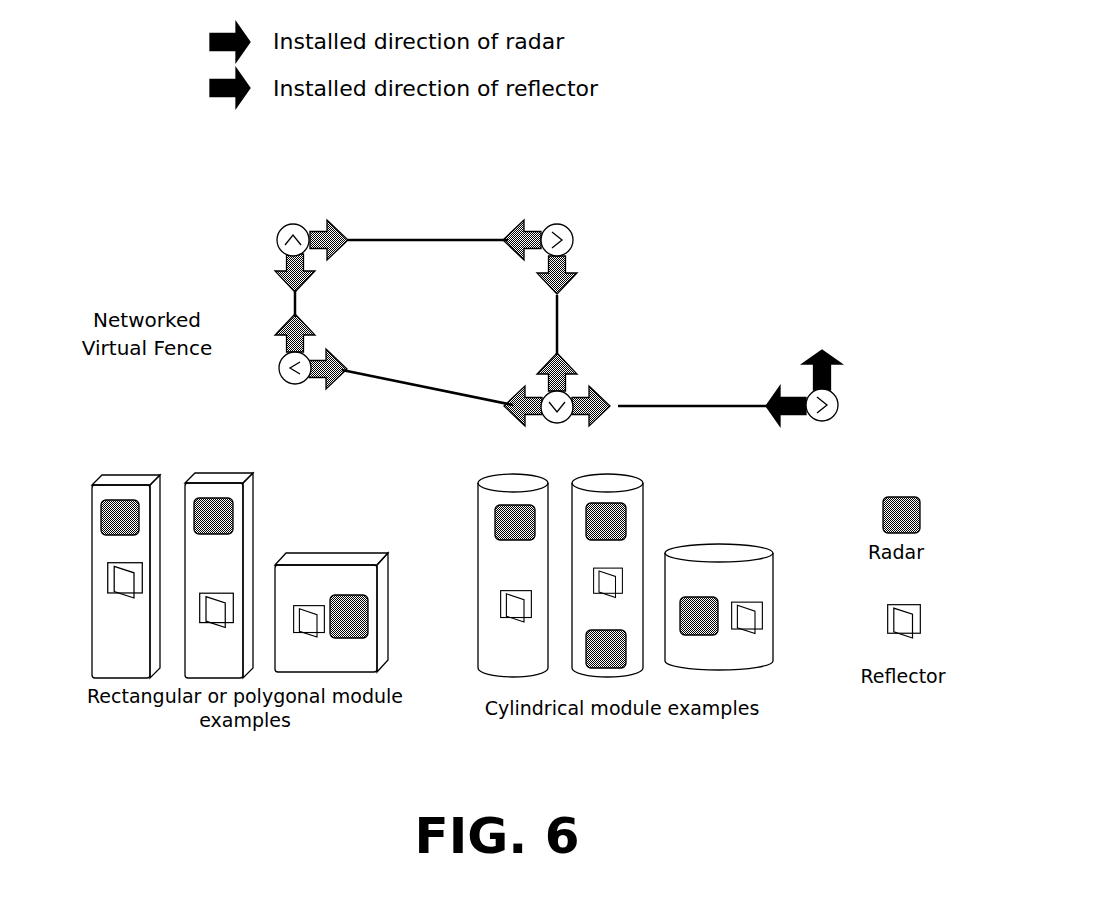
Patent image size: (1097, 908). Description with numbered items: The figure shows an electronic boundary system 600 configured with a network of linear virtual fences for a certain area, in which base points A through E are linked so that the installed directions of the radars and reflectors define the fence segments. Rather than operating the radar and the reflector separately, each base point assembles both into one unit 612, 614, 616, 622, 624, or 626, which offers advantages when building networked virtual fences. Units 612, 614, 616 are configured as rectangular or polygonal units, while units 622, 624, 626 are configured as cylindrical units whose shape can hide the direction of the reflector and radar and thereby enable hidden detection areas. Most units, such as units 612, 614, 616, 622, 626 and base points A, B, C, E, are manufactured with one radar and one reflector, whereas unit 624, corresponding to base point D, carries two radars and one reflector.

The electronic boundary system 600 is at (735, 188).
The unit 612 is at (115, 472).
The unit 614 is at (207, 473).
The unit 616 is at (318, 553).
The unit 622 is at (507, 475).
The unit 624 is at (592, 475).
The unit 626 is at (712, 545).